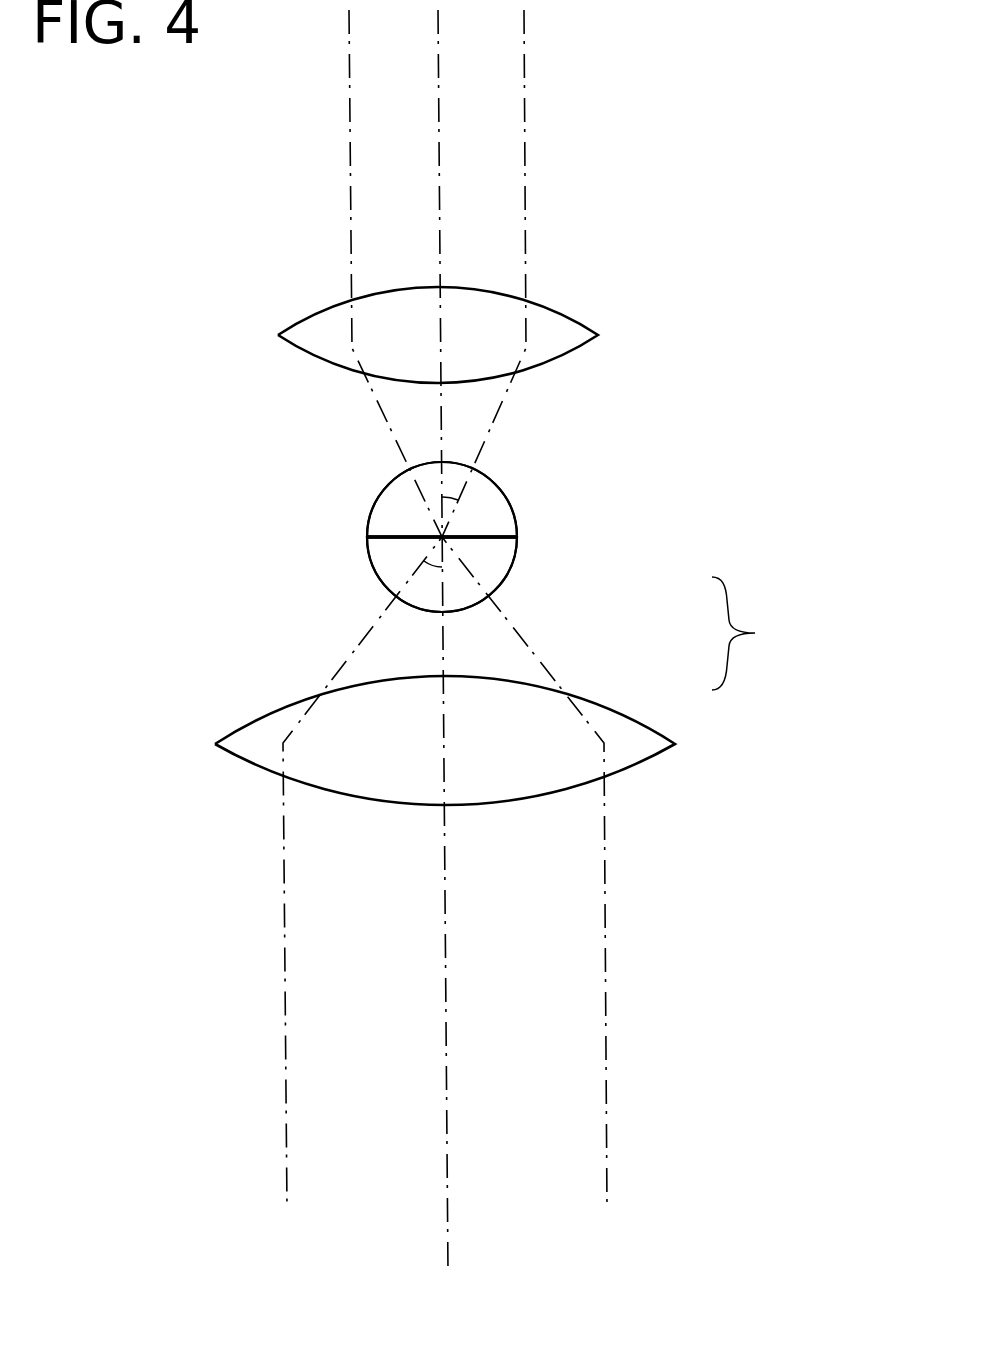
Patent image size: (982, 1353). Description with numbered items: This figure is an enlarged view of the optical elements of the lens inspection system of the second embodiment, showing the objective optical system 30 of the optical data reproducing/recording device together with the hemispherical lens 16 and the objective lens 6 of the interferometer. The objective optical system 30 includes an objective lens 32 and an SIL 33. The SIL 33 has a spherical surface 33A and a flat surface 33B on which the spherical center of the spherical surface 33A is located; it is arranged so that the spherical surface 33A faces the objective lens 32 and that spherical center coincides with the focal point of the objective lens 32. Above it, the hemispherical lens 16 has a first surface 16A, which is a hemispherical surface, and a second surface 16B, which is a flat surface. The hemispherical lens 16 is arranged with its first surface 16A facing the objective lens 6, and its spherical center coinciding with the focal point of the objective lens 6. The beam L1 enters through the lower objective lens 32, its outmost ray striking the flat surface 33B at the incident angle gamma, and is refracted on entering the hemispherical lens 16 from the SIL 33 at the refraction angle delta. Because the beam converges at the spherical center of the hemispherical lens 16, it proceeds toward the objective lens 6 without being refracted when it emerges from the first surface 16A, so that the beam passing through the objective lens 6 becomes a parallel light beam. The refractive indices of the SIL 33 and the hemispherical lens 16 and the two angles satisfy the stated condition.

The objective lens 6 is at (538, 320).
The hemispherical lens 16 is at (498, 515).
The first surface 16A is at (502, 490).
The second surface 16B is at (388, 538).
The SIL 33 is at (483, 571).
The spherical surface 33A is at (517, 558).
The flat surface 33B is at (412, 537).
The objective lens 32 is at (583, 707).
The objective optical system 30 is at (756, 633).
The beam L1 is at (604, 878).